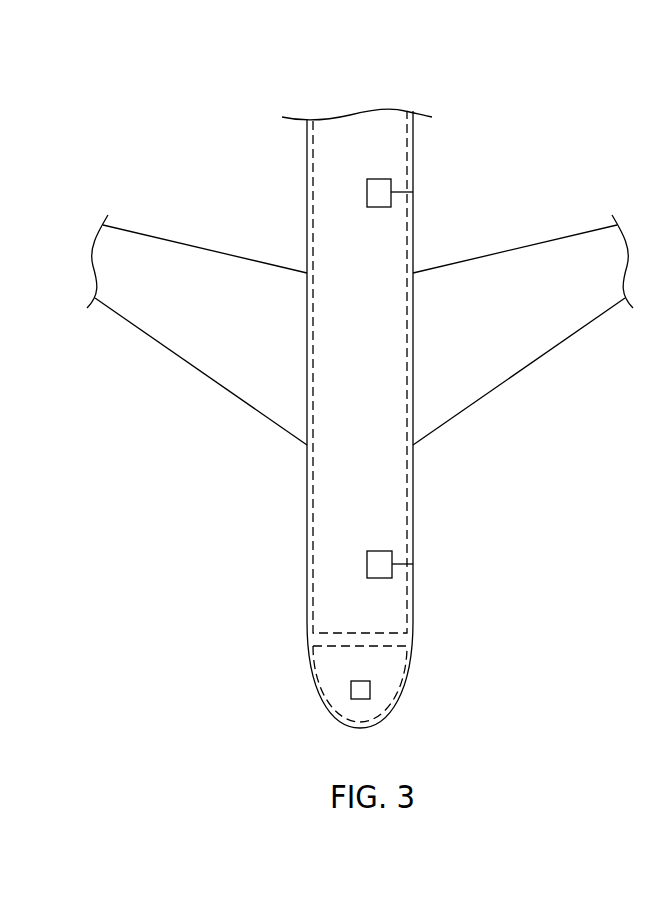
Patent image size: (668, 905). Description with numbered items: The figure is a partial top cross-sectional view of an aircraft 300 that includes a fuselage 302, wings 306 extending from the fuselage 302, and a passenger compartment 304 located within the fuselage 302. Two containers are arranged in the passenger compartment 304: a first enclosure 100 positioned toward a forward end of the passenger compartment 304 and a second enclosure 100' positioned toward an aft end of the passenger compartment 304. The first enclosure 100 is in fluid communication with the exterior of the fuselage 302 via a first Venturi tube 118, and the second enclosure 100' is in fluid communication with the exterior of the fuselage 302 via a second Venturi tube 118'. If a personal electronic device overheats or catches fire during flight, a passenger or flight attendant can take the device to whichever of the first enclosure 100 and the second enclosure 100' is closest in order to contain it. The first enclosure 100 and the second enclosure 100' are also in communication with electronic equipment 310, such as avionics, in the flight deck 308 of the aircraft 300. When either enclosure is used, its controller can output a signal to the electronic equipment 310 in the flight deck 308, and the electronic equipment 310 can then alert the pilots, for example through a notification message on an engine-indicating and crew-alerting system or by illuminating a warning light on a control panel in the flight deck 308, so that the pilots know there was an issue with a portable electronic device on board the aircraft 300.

The aircraft 300 is at (231, 143).
The fuselage 302 is at (415, 467).
The passenger compartment 304 is at (367, 392).
The wings 306 is at (188, 253).
The first enclosure 100 is at (355, 540).
The second enclosure 100' is at (355, 174).
The first Venturi tube 118 is at (435, 543).
The second Venturi tube 118' is at (438, 172).
The flight deck 308 is at (388, 683).
The electronic equipment 310 is at (362, 700).